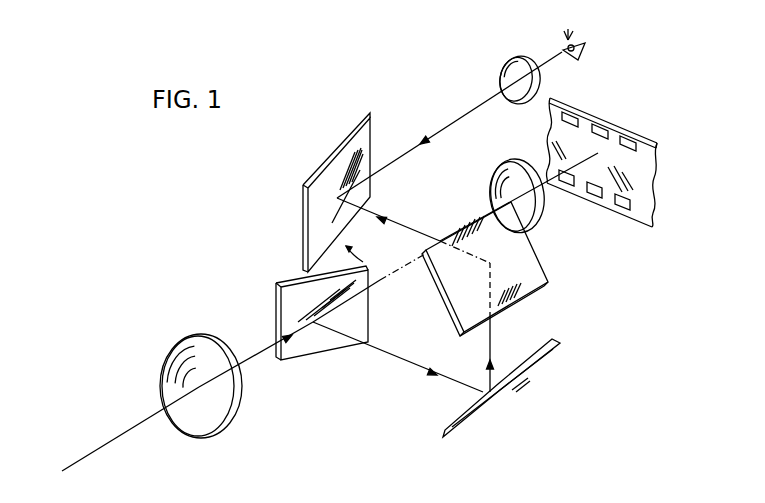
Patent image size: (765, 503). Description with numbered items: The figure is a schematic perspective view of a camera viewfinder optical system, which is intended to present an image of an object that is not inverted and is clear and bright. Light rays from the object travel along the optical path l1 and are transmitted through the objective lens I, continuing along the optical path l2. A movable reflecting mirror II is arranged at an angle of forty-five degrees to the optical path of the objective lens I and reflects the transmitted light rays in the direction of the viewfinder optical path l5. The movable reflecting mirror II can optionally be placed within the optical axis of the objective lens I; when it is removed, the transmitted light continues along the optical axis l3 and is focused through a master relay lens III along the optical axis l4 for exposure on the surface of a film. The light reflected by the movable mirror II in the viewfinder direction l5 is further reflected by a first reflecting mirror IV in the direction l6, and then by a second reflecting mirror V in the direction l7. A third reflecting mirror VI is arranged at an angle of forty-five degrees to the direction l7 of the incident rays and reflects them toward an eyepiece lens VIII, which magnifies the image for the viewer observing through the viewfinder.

The objective lens I is at (207, 438).
The movable reflecting mirror II is at (322, 342).
The master relay lens III is at (506, 162).
The first reflecting mirror IV is at (508, 396).
The second reflecting mirror V is at (543, 272).
The third reflecting mirror VI is at (345, 142).
The eyepiece lens VIII is at (504, 62).
The optical path from the object l1 is at (108, 443).
The optical path after the objective lens l2 is at (258, 354).
The optical axis to the relay lens l3 is at (380, 282).
The optical axis to the film l4 is at (546, 184).
The viewfinder optical path l5 is at (398, 358).
The direction of reflection from the first reflecting mirror l6 is at (493, 344).
The direction of reflection from the second reflecting mirror l7 is at (393, 221).